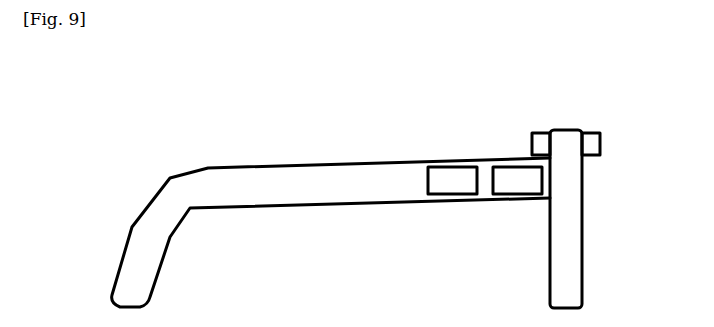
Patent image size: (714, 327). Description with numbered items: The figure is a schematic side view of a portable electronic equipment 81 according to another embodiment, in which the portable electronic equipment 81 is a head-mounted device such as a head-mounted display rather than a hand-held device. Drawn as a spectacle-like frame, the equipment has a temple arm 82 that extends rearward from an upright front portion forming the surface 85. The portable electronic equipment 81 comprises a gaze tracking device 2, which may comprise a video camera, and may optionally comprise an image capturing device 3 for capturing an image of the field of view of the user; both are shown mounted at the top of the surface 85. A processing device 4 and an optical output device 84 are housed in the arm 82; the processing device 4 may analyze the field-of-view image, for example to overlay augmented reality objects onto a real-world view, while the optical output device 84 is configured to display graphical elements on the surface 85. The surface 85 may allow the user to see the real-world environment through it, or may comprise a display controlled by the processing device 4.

The portable electronic equipment 81 is at (183, 113).
The temple arm 82 is at (153, 195).
The surface 85 is at (582, 258).
The gaze tracking device 2 is at (543, 132).
The image capturing device 3 is at (597, 132).
The processing device 4 is at (440, 195).
The optical output device 84 is at (517, 195).